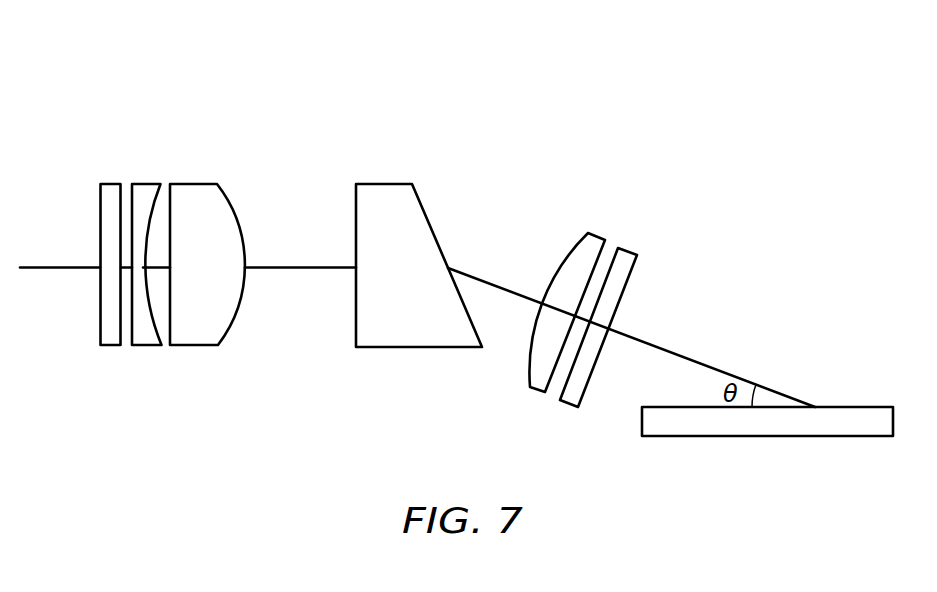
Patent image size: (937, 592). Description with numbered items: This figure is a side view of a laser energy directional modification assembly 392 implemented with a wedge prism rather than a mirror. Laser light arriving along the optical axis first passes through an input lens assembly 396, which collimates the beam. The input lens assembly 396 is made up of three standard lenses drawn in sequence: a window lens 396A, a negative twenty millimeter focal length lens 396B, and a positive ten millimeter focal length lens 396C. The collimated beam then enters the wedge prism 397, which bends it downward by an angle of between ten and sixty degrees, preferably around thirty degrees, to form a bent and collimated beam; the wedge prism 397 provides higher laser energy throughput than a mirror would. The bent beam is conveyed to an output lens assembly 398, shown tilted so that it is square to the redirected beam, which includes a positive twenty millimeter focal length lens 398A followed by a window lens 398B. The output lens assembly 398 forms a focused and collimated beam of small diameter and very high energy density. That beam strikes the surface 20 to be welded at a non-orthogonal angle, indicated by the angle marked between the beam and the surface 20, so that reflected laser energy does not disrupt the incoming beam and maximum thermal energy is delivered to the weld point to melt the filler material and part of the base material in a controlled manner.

The laser energy directional modification assembly 392 is at (417, 219).
The input lens assembly 396 is at (157, 253).
The window lens 396A is at (72, 240).
The −20 mm f.l. lens 396B is at (112, 220).
The +10 mm f.l. lens 396C is at (230, 234).
The wedge prism 397 is at (419, 291).
The output lens assembly 398 is at (611, 317).
The +20 mm f.l. lens 398A is at (567, 288).
The window lens 398B is at (636, 309).
The surface 20 is at (767, 443).